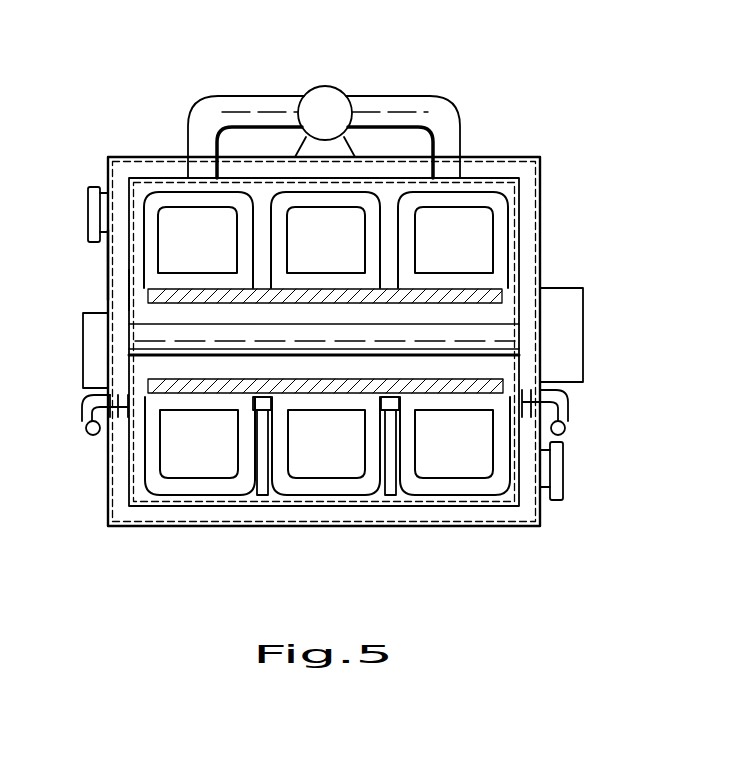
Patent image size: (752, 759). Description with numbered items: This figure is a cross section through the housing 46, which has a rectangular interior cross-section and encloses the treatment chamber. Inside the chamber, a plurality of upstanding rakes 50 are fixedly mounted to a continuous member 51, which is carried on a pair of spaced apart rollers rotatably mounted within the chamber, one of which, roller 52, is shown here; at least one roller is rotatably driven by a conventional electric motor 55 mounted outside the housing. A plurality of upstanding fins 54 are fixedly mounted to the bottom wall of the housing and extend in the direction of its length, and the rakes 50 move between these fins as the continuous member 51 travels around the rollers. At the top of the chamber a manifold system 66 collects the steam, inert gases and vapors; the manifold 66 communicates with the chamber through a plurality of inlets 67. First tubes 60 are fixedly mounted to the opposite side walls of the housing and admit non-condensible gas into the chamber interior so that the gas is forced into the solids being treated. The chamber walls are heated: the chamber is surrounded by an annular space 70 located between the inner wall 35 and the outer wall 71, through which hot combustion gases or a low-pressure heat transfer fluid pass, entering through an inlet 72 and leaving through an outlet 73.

The inner wall 35 is at (130, 290).
The housing 46 is at (541, 157).
The upstanding rakes 50 is at (465, 202).
The continuous member 51 is at (500, 294).
The roller 52 is at (512, 331).
The upstanding fins 54 is at (262, 498).
The electric motor 55 is at (584, 350).
The first tubes 60 is at (90, 432).
The manifold system 66 is at (318, 87).
The inlets 67 is at (192, 116).
The annular space 70 is at (541, 185).
The outer wall 71 is at (108, 265).
The inlet 72 is at (94, 188).
The outlet 73 is at (565, 483).